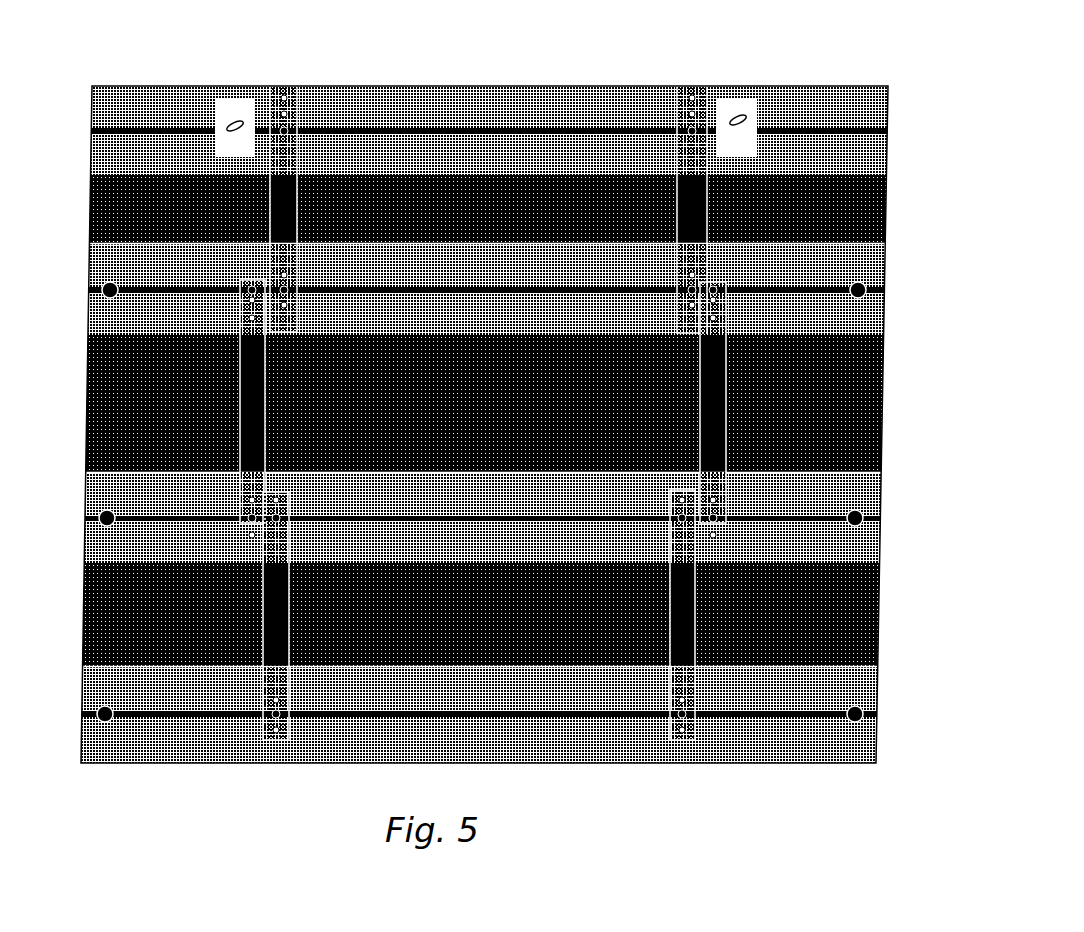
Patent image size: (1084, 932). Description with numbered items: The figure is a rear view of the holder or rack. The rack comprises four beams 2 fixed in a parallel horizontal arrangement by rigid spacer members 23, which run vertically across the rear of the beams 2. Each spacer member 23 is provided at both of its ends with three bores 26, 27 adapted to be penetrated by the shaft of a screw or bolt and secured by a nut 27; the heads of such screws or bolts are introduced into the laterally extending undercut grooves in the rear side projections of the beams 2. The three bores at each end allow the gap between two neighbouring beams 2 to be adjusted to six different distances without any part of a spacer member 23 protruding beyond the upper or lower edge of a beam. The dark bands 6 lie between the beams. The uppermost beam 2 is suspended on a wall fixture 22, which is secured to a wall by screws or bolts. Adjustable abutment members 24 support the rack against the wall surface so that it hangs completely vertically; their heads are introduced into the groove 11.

The beam 2 is at (563, 95).
The gap / insulation strip 6 is at (888, 203).
The groove 11 is at (885, 115).
The wall fixture 22 is at (228, 112).
The spacer member 23 is at (290, 95).
The adjustable abutment member 24 is at (888, 275).
The bore 26 is at (272, 106).
The nut 27 is at (673, 124).